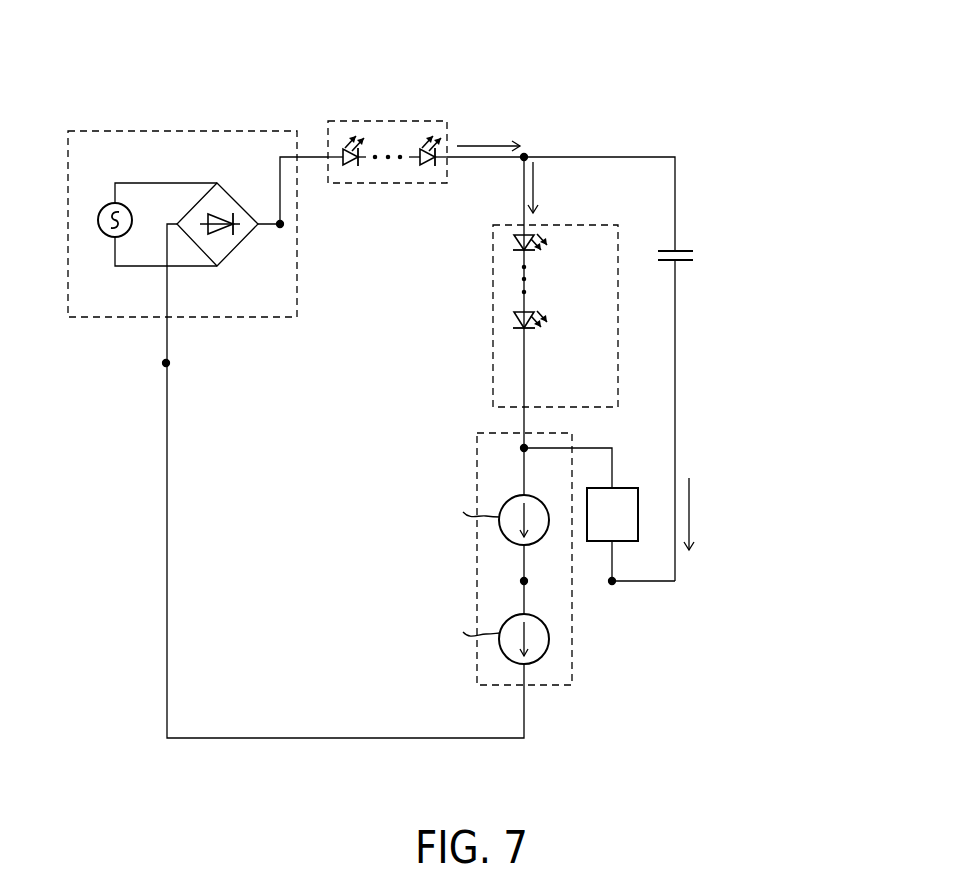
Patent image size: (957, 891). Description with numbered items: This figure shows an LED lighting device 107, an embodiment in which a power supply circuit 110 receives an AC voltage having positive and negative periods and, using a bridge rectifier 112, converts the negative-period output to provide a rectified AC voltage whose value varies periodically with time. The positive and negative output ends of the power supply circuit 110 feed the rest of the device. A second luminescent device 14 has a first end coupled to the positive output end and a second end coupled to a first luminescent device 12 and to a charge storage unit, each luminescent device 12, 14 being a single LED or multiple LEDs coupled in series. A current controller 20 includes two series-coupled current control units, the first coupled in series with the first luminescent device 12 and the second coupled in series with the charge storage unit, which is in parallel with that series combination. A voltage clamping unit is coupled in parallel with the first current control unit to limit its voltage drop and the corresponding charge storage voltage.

The LED lighting device 107 is at (694, 78).
The power supply circuit 110 is at (167, 131).
The bridge rectifier 112 is at (237, 198).
The second luminescent device 14 is at (380, 121).
The first luminescent device 12 is at (492, 320).
The current controller 20 is at (477, 465).